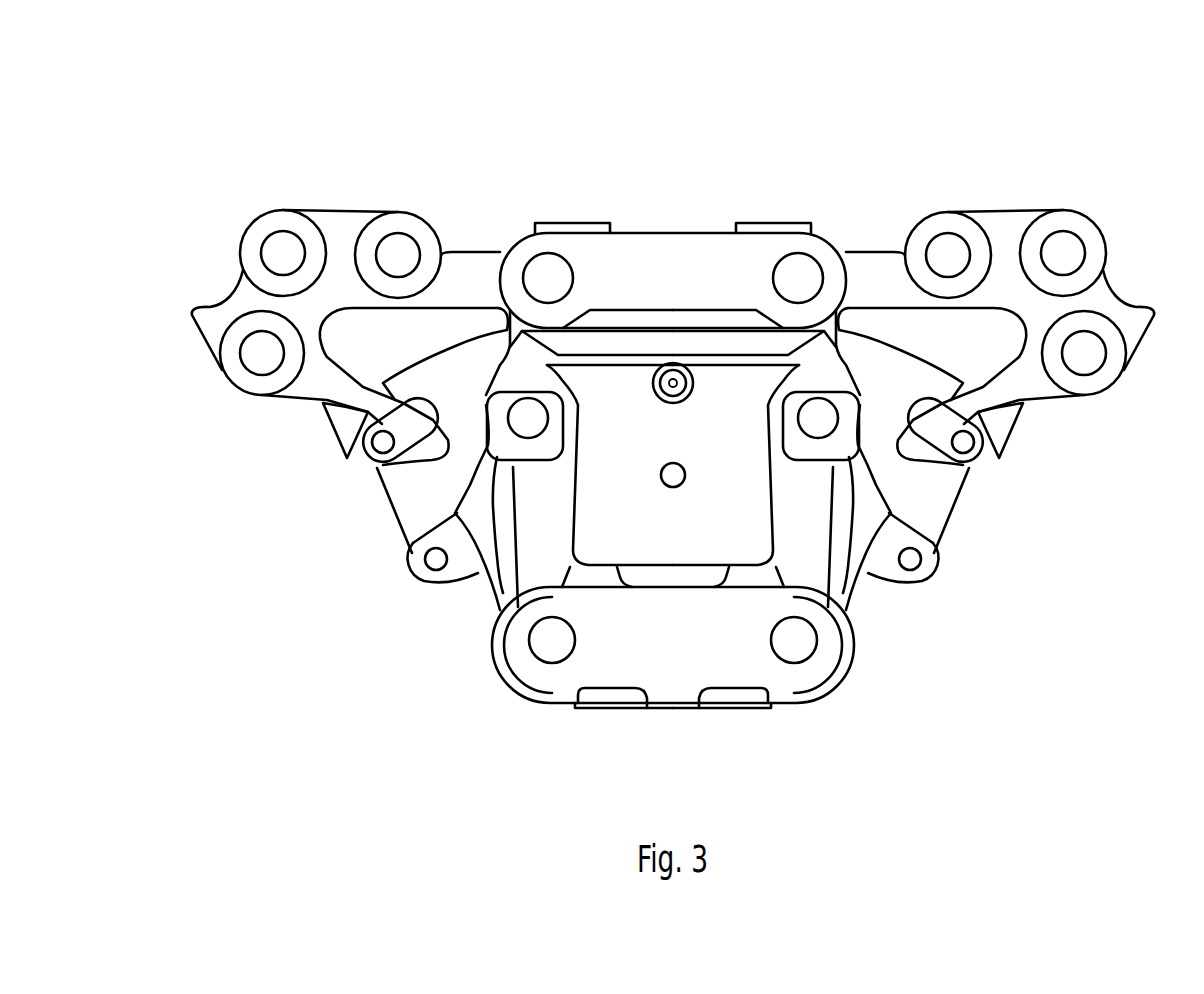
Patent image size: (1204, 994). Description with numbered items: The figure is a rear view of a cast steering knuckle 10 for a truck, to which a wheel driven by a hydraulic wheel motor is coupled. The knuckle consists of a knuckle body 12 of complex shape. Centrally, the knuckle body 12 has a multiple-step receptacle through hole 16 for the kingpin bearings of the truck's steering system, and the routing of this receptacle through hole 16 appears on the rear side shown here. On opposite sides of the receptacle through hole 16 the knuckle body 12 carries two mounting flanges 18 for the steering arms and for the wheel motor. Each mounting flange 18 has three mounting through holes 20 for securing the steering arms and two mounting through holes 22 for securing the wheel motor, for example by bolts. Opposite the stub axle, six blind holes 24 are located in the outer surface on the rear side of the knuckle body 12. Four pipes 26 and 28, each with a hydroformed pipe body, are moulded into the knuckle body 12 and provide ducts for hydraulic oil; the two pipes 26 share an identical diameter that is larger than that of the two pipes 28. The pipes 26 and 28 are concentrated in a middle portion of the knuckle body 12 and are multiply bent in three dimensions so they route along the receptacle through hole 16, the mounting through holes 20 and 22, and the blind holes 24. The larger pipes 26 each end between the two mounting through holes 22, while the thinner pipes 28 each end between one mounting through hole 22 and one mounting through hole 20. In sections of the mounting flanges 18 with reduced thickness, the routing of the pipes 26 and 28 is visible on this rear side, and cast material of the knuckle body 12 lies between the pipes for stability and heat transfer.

The cast steering knuckle 10 is at (200, 185).
The knuckle body 12 is at (477, 236).
The receptacle through hole 16 is at (670, 226).
The mounting flange 18 is at (351, 333).
The mounting through hole 20 is at (277, 250).
The mounting through hole 22 is at (380, 442).
The blind hole 24 is at (548, 275).
The pipe 26 is at (390, 512).
The pipe 28 is at (330, 433).